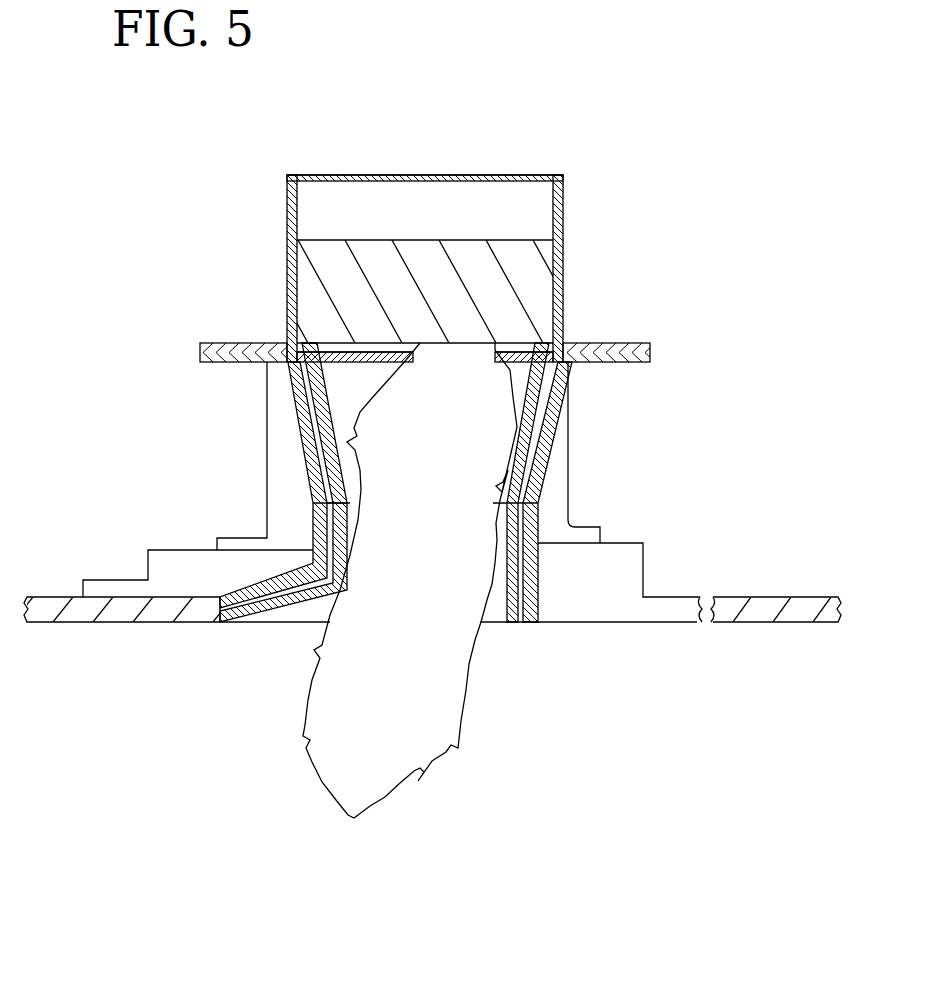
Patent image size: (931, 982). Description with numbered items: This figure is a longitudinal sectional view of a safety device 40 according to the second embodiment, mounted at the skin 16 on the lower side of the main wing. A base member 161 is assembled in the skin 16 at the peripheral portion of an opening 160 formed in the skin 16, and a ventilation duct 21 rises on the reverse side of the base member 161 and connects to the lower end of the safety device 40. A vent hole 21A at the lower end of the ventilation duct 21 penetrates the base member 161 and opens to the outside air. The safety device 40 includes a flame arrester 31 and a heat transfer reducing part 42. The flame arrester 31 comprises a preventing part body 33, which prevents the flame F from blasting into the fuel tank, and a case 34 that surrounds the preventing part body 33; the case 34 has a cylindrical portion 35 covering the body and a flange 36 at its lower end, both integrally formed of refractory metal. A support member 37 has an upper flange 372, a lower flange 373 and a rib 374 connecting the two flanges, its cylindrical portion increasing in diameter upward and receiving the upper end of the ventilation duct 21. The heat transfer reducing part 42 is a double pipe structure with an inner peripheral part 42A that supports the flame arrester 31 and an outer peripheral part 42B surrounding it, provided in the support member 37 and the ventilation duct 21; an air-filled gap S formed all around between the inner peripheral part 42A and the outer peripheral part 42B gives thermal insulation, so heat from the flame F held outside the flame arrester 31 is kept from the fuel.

The skin 16 is at (776, 623).
The opening 160 is at (707, 623).
The base member 161 is at (591, 623).
The ventilation duct 21 is at (288, 617).
The vent hole 21A is at (498, 606).
The flame arrester 31 is at (522, 131).
The preventing part body 33 is at (416, 240).
The case 34 is at (484, 211).
The cylindrical portion 35 is at (563, 262).
The flange 36 is at (625, 343).
The support member 37 is at (299, 447).
The upper flange 372 is at (640, 363).
The lower flange 373 is at (585, 527).
The rib 374 is at (265, 500).
The safety device 40 is at (672, 160).
The heat transfer reducing part 42 is at (282, 199).
The inner peripheral part 42A is at (291, 328).
The outer peripheral part 42B is at (292, 372).
The gap S is at (294, 397).
The flame F is at (325, 773).